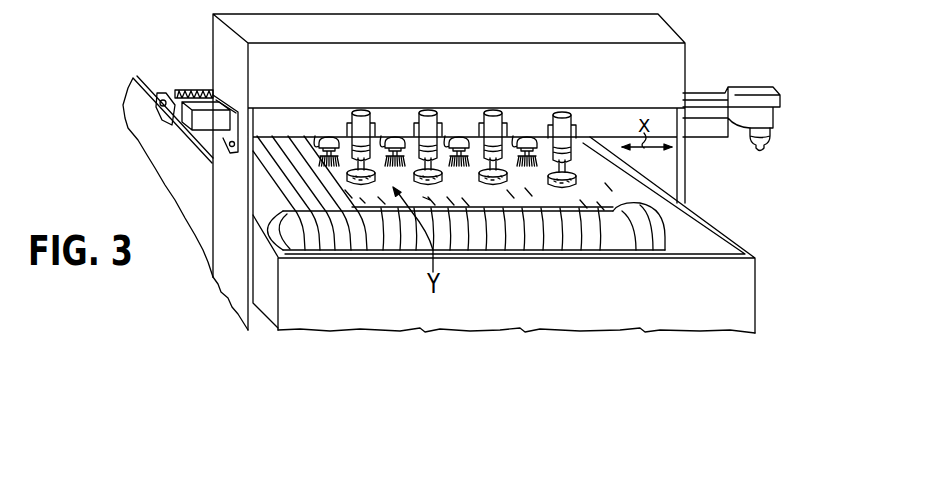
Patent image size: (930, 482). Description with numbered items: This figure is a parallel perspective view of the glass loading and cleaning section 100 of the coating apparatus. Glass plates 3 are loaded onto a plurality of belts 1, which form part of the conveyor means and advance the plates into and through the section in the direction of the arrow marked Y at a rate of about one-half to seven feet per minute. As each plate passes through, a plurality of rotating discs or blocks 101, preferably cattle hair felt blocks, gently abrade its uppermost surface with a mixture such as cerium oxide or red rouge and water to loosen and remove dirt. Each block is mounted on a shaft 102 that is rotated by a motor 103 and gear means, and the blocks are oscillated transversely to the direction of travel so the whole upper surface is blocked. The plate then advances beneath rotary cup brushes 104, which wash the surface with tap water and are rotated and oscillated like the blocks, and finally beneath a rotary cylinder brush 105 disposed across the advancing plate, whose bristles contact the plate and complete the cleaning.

The glass loading and cleaning section 100 is at (196, 30).
The rotating discs or blocks 101 is at (417, 170).
The shaft 102 is at (570, 177).
The motor 103 is at (765, 131).
The rotary cup brushes 104 is at (312, 136).
The rotary cylinder brush 105 is at (183, 91).
The belts 1 is at (566, 241).
The glass plates 3 is at (646, 205).